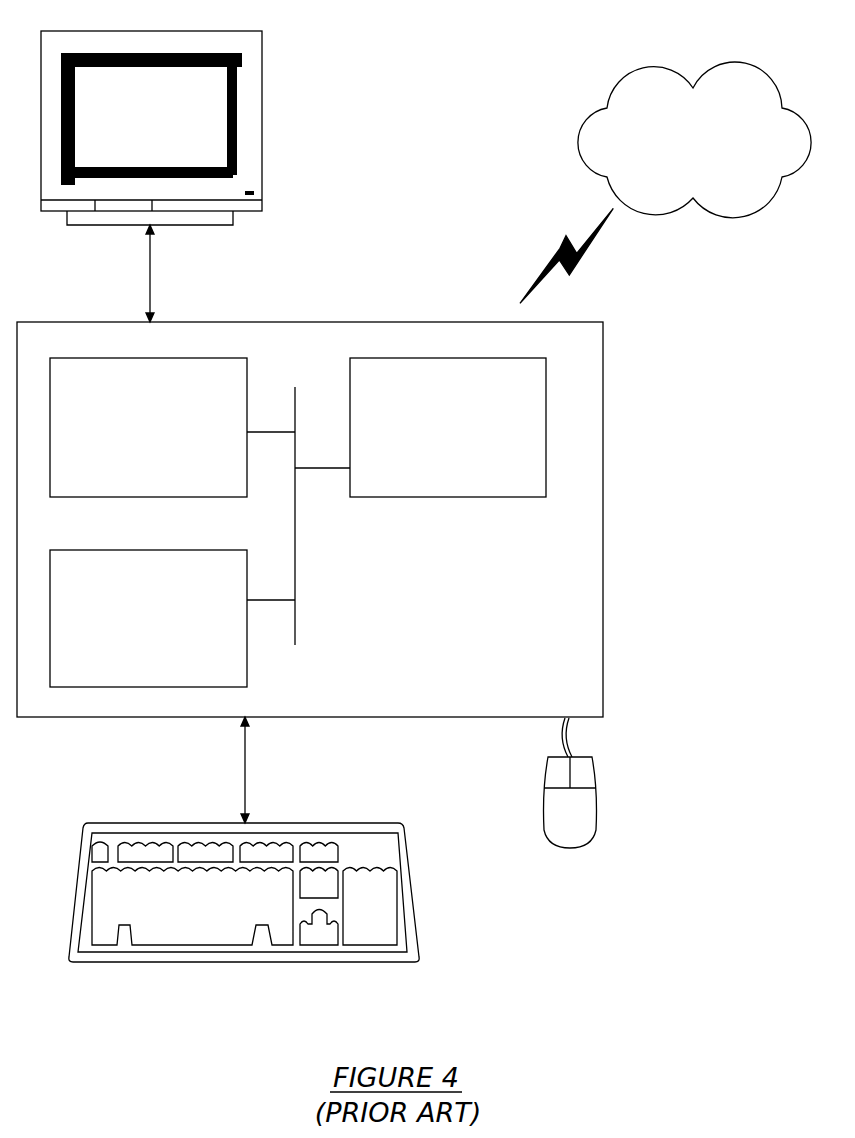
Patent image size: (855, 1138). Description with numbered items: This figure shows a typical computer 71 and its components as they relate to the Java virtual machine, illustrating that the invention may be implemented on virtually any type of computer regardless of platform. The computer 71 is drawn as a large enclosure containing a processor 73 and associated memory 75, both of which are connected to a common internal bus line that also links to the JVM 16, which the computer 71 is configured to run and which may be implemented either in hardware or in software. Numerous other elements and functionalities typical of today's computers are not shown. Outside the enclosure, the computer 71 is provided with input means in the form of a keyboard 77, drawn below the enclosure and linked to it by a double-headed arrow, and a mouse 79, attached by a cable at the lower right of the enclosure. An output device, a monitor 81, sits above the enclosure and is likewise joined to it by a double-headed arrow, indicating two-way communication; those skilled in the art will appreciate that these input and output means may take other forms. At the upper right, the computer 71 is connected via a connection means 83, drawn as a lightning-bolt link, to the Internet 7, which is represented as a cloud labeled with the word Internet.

The Internet 7 is at (667, 68).
The JVM 16 is at (434, 441).
The computer 71 is at (344, 519).
The processor 73 is at (134, 439).
The memory 75 is at (134, 629).
The keyboard 77 is at (174, 913).
The mouse 79 is at (556, 827).
The monitor 81 is at (136, 139).
The connection means 83 is at (543, 238).